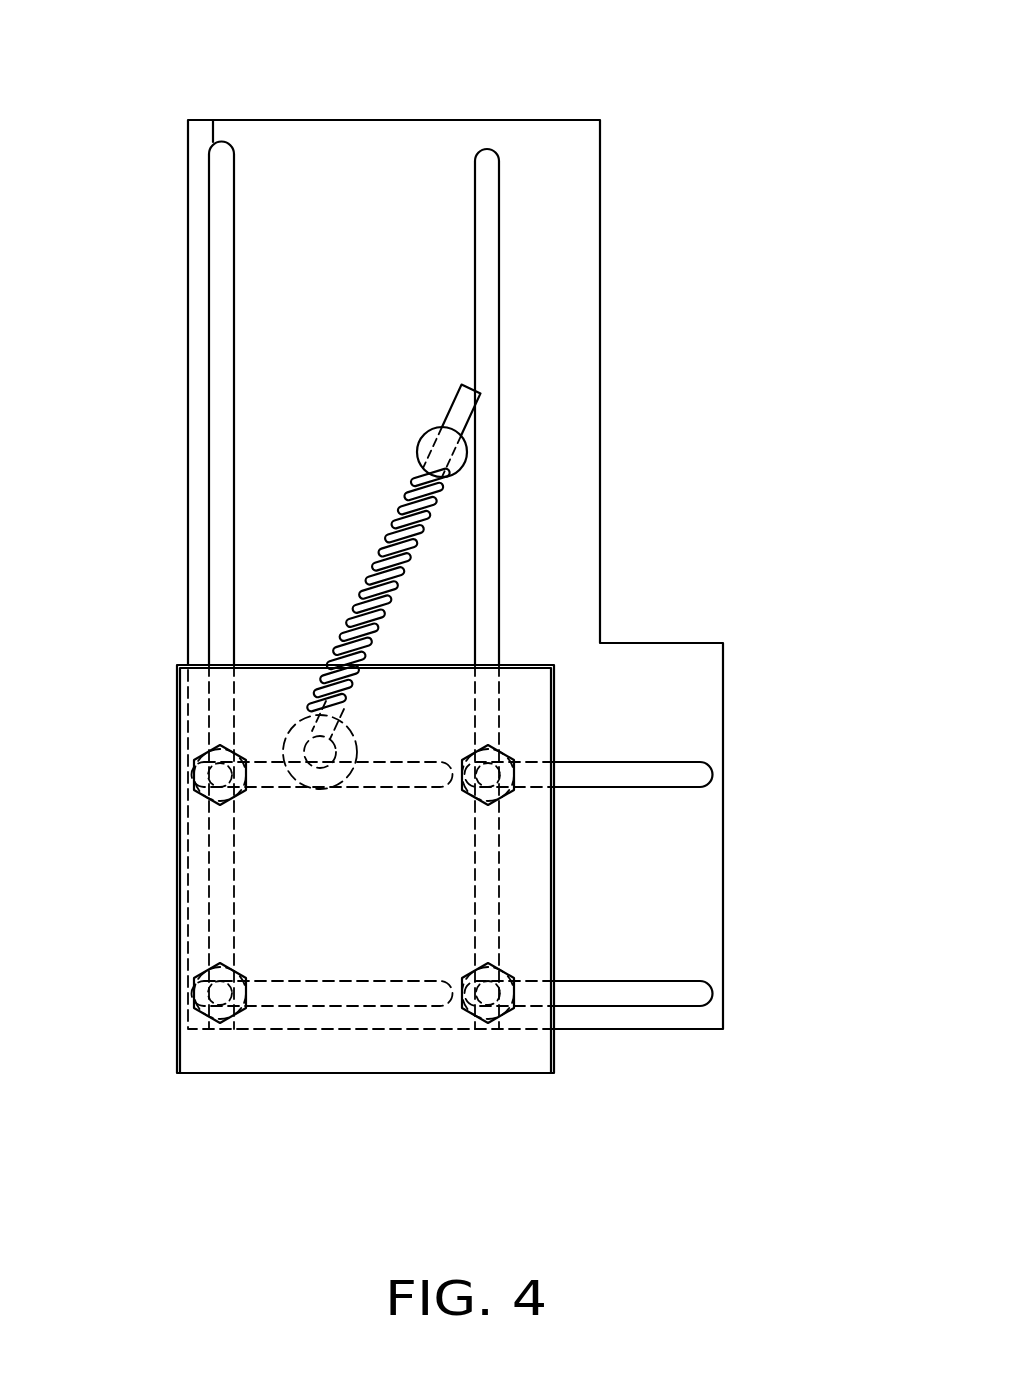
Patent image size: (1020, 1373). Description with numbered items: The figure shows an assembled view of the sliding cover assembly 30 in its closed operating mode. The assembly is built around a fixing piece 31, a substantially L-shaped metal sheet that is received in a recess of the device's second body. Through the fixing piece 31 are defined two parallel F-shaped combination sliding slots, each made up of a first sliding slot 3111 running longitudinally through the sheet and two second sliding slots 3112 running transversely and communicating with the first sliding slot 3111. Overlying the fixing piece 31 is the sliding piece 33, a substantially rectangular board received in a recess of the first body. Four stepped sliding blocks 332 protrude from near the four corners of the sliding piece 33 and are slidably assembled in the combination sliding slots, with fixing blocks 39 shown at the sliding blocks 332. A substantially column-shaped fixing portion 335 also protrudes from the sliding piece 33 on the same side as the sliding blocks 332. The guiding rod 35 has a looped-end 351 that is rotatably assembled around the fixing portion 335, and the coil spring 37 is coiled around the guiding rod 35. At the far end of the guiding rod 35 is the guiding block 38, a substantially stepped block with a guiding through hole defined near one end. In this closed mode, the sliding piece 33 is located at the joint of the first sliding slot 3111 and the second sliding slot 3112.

The sliding cover assembly 30 is at (503, 205).
The fixing piece 31 is at (570, 223).
The first sliding slot 3111 is at (483, 325).
The second sliding slot 3112 is at (620, 773).
The sliding piece 33 is at (208, 1055).
The sliding block 332 is at (212, 778).
The fixing portion 335 is at (290, 732).
The looped-end 351 is at (317, 735).
The guiding rod 35 is at (458, 412).
The coil spring 37 is at (443, 498).
The guiding block 38 is at (458, 460).
The fixing block 39 is at (215, 797).